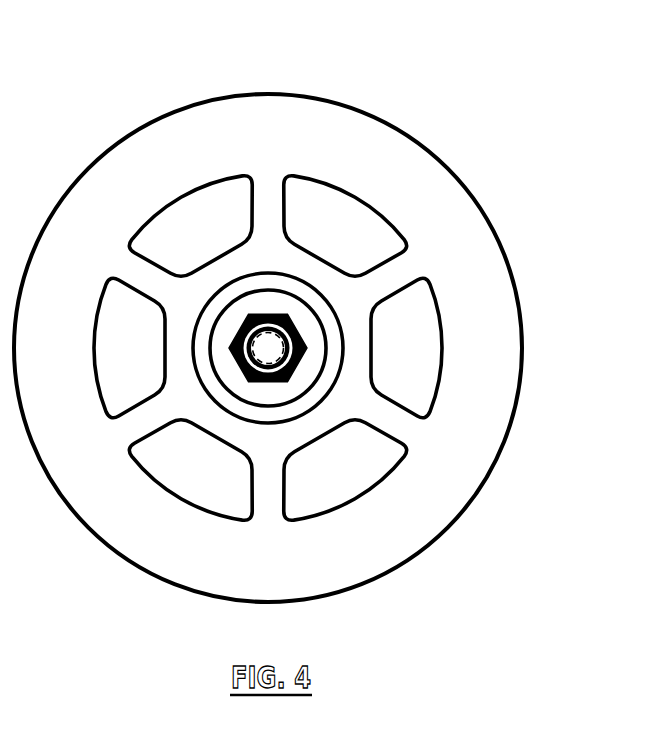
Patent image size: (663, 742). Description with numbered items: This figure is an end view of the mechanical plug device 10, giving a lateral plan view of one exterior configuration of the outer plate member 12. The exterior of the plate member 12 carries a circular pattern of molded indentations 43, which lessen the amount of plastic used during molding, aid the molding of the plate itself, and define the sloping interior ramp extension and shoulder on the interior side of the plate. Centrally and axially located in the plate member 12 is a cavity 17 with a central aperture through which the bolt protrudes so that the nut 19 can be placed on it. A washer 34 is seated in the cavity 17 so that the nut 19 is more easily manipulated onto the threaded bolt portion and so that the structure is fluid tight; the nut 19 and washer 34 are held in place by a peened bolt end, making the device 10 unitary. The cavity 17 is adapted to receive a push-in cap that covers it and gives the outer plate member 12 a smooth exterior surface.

The device 10 is at (296, 316).
The outer plate member 12 is at (450, 213).
The cavity 17 is at (233, 292).
The nut 19 is at (289, 338).
The washer 34 is at (302, 377).
The molded indentations 43 is at (413, 378).